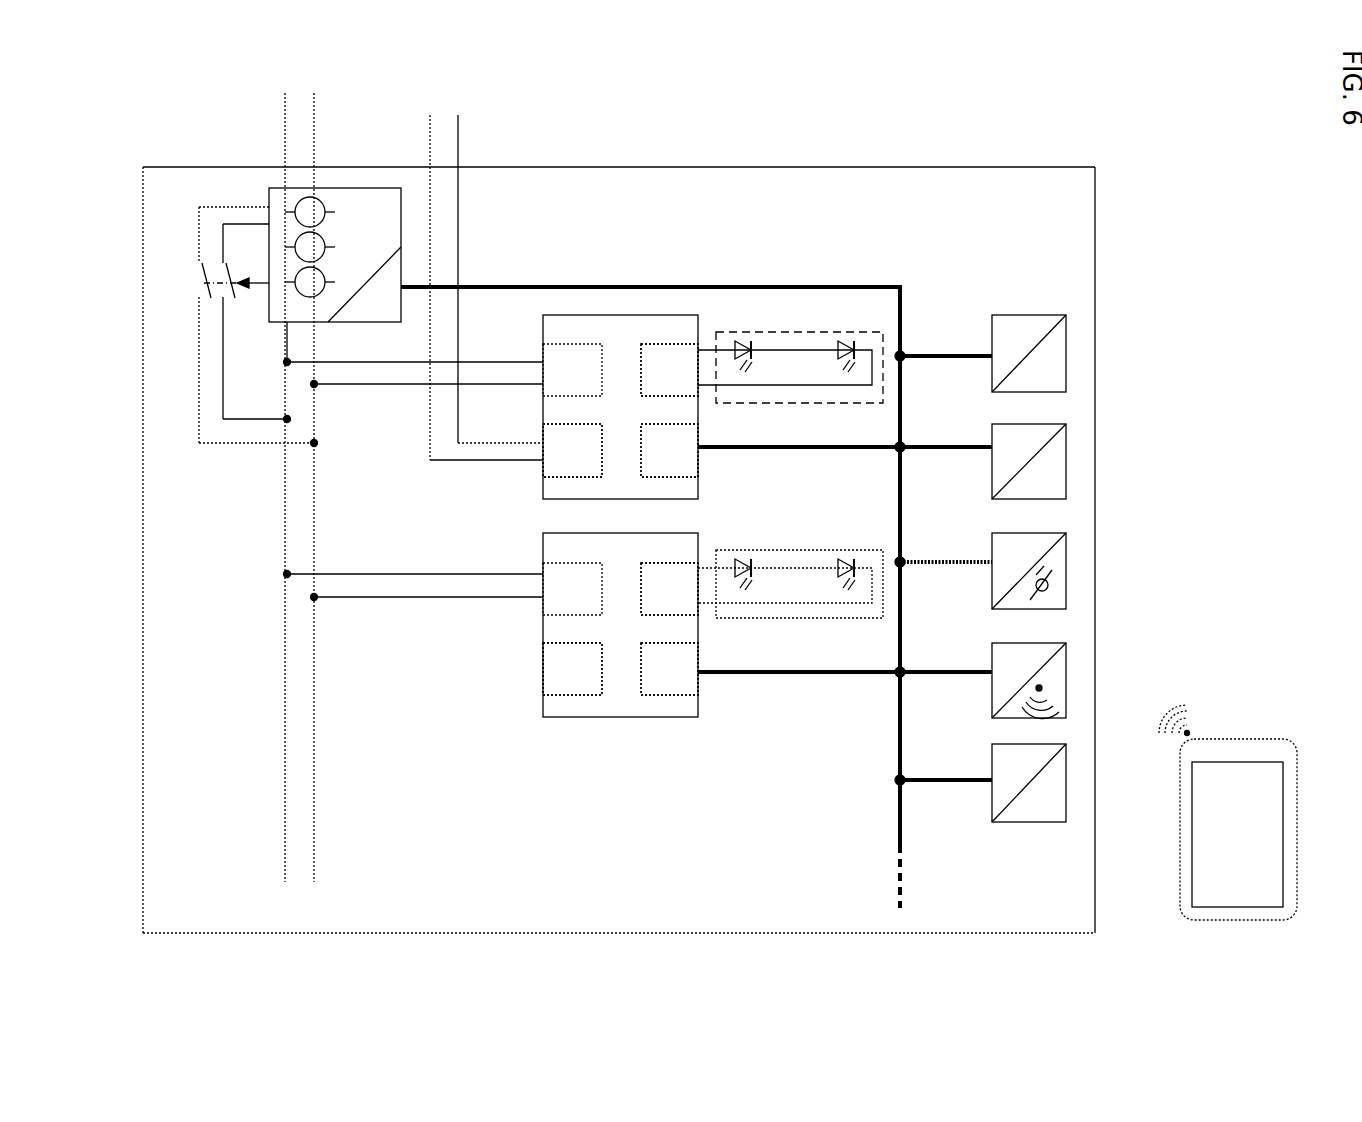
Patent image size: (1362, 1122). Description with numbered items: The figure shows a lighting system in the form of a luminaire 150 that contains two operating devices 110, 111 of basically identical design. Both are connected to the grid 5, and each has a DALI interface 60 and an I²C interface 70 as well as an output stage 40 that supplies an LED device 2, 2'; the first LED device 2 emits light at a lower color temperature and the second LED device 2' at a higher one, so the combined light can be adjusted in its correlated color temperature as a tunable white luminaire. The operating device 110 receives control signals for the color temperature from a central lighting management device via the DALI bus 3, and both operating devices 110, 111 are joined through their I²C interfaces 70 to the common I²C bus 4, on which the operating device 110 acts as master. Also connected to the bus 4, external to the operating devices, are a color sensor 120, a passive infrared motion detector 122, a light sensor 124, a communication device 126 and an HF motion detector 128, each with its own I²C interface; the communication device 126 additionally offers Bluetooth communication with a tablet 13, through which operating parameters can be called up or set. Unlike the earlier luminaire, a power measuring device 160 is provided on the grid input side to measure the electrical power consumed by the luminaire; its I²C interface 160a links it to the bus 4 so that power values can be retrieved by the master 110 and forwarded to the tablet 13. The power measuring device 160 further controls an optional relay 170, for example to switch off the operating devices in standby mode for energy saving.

The LED device 2 is at (790, 349).
The second LED device 2' is at (790, 563).
The DALI bus 3 is at (446, 143).
The I²C bus 4 is at (906, 312).
The grid 5 is at (302, 88).
The mobile device 13 is at (1297, 800).
The output stage 40 is at (660, 358).
The DALI interface 60 is at (560, 460).
The I²C interface 70 is at (690, 460).
The operating device 110 is at (543, 340).
The operating device 111 is at (543, 562).
The color sensor 120 is at (1066, 343).
The passive infrared motion detector 122 is at (1066, 460).
The light sensor 124 is at (1066, 568).
The communication device 126 is at (1037, 655).
The HF motion detector 128 is at (1066, 776).
The luminaire 150 is at (730, 167).
The power measuring device 160 is at (355, 188).
The I²C interface 160a is at (380, 280).
The relay 170 is at (202, 265).